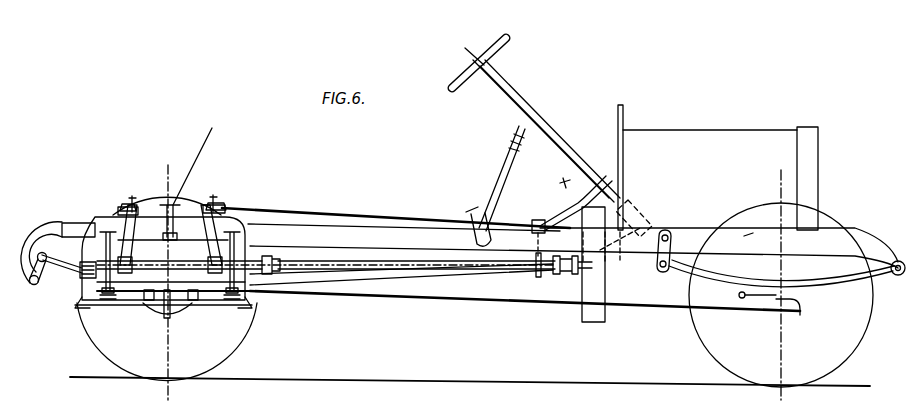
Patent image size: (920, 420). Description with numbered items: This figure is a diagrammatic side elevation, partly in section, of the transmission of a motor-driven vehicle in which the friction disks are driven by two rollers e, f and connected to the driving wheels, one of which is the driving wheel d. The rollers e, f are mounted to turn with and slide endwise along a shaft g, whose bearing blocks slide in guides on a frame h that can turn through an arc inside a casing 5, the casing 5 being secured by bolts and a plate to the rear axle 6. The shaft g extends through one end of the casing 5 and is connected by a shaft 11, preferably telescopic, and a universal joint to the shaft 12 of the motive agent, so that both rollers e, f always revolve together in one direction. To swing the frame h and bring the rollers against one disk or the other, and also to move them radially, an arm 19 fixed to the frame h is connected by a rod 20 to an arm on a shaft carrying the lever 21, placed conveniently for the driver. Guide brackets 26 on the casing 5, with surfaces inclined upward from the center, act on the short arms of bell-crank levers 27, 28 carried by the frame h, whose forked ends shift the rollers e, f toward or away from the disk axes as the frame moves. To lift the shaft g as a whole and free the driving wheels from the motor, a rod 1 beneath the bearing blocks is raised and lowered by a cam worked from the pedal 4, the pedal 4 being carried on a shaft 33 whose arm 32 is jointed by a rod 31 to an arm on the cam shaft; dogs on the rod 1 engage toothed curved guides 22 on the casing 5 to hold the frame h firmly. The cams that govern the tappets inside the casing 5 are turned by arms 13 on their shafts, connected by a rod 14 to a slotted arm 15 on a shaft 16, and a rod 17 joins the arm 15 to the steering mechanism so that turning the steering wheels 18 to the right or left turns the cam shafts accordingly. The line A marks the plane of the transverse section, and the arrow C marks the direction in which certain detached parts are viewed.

The rod 1 is at (78, 272).
The pedal 4 is at (562, 183).
The casing 5 is at (78, 256).
The rear axle 6 is at (163, 320).
The shaft 11 is at (347, 270).
The shaft of the motive agent 12 is at (573, 266).
The arms 13 is at (108, 300).
The rod 14 is at (150, 306).
The arm 15 is at (194, 301).
The shaft 16 is at (171, 320).
The rod 17 is at (460, 305).
The steering wheels 18 is at (716, 351).
The arm 19 is at (203, 159).
The rod 20 is at (352, 212).
The lever 21 is at (504, 160).
The slotted curved guides 22 is at (80, 302).
The guide brackets 26 is at (120, 209).
The bell-crank lever 27 is at (133, 200).
The bell-crank lever 28 is at (213, 200).
The rod 31 is at (418, 278).
The arm 32 is at (538, 278).
The shaft 33 is at (537, 221).
The section line A is at (164, 276).
The arrow C is at (230, 356).
The driving wheel d is at (150, 301).
The roller e is at (130, 235).
The roller f is at (207, 235).
The shaft g is at (170, 229).
The frame h is at (284, 251).